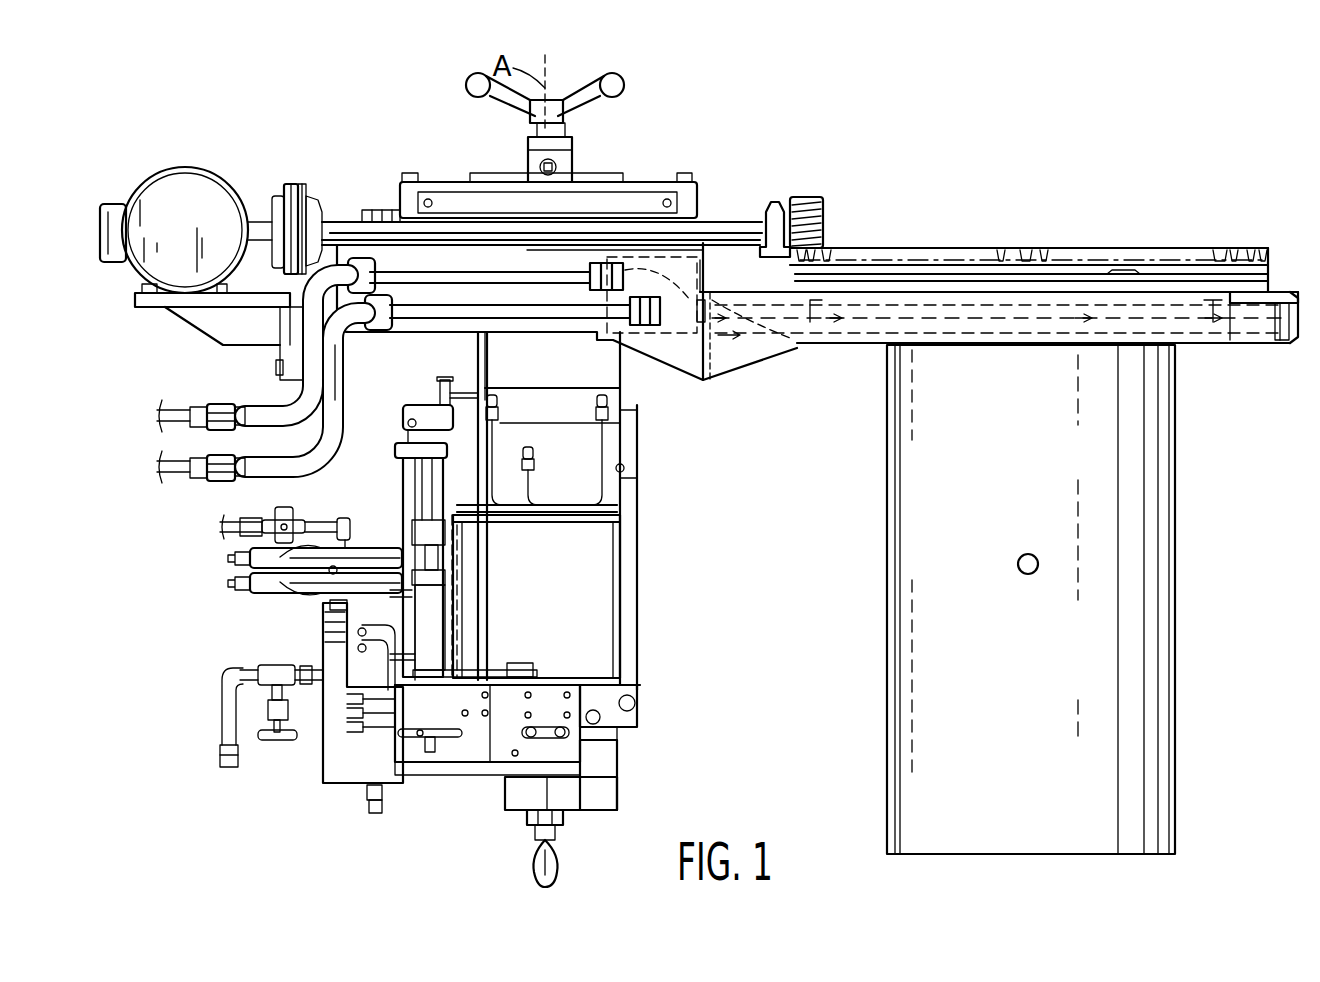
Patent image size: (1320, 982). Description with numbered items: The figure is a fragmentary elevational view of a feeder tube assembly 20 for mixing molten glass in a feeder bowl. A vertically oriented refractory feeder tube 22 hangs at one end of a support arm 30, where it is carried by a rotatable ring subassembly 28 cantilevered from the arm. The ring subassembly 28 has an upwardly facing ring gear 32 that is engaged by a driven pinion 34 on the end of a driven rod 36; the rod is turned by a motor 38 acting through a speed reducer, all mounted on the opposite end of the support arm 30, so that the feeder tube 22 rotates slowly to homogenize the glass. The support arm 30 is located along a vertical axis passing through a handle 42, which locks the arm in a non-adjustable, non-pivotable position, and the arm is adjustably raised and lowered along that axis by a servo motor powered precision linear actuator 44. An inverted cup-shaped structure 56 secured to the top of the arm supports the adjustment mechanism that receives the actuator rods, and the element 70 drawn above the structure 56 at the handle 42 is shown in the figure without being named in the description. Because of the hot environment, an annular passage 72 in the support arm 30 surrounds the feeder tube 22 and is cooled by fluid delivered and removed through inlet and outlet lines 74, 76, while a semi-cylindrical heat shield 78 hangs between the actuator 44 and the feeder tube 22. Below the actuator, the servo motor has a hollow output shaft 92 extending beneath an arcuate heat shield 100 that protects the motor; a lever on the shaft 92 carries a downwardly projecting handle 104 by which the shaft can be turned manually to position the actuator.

The feeder tube assembly 20 is at (879, 148).
The refractory feeder tube 22 is at (1176, 545).
The rotatable ring subassembly 28 is at (1274, 268).
The support arm 30 is at (793, 348).
The ring gear 32 is at (1218, 251).
The driven pinion 34 is at (825, 200).
The driven rod 36 is at (737, 218).
The motor 38 is at (208, 167).
The handle 42 is at (592, 86).
The linear actuator 44 is at (600, 578).
The inverted cup-shaped structure 56 is at (473, 176).
The clamp block 70 is at (575, 161).
The annular passage 72 is at (745, 348).
The inlet line 74 is at (256, 406).
The outlet line 76 is at (285, 460).
The heat shield 78 is at (622, 383).
The hollow output shaft 92 is at (507, 783).
The arcuate heat shield 100 is at (615, 793).
The handle 104 is at (560, 858).